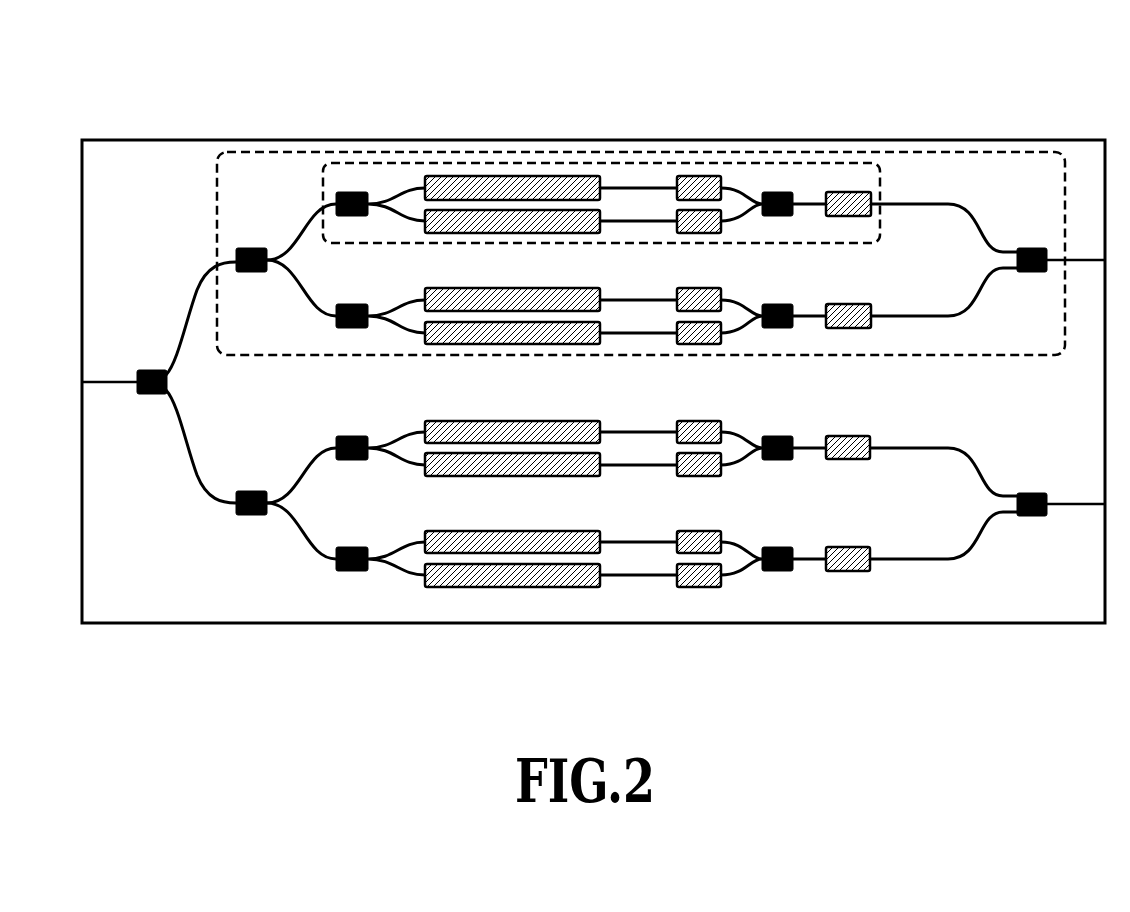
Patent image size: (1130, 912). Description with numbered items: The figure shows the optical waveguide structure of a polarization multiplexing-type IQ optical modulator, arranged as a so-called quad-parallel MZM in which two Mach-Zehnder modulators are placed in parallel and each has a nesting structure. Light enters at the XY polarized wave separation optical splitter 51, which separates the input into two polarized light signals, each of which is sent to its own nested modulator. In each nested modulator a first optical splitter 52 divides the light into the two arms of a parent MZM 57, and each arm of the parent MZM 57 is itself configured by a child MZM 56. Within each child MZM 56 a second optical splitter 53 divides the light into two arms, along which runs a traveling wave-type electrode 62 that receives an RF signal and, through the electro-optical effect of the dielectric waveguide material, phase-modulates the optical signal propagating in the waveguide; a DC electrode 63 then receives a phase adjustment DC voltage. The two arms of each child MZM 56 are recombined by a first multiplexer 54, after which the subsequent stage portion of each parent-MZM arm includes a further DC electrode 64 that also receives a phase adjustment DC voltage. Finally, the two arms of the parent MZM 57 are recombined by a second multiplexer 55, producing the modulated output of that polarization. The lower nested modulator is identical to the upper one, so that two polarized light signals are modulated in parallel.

The XY polarized wave separation optical splitter 51 is at (150, 386).
The first optical splitter 52 is at (250, 506).
The second optical splitter 53 is at (350, 563).
The first multiplexer 54 is at (780, 563).
The second multiplexer 55 is at (1033, 508).
The child MZM 56 is at (814, 163).
The parent MZM 57 is at (980, 152).
The traveling wave-type electrode 62 is at (508, 578).
The DC electrode 63 is at (695, 578).
The DC electrode 64 is at (845, 563).